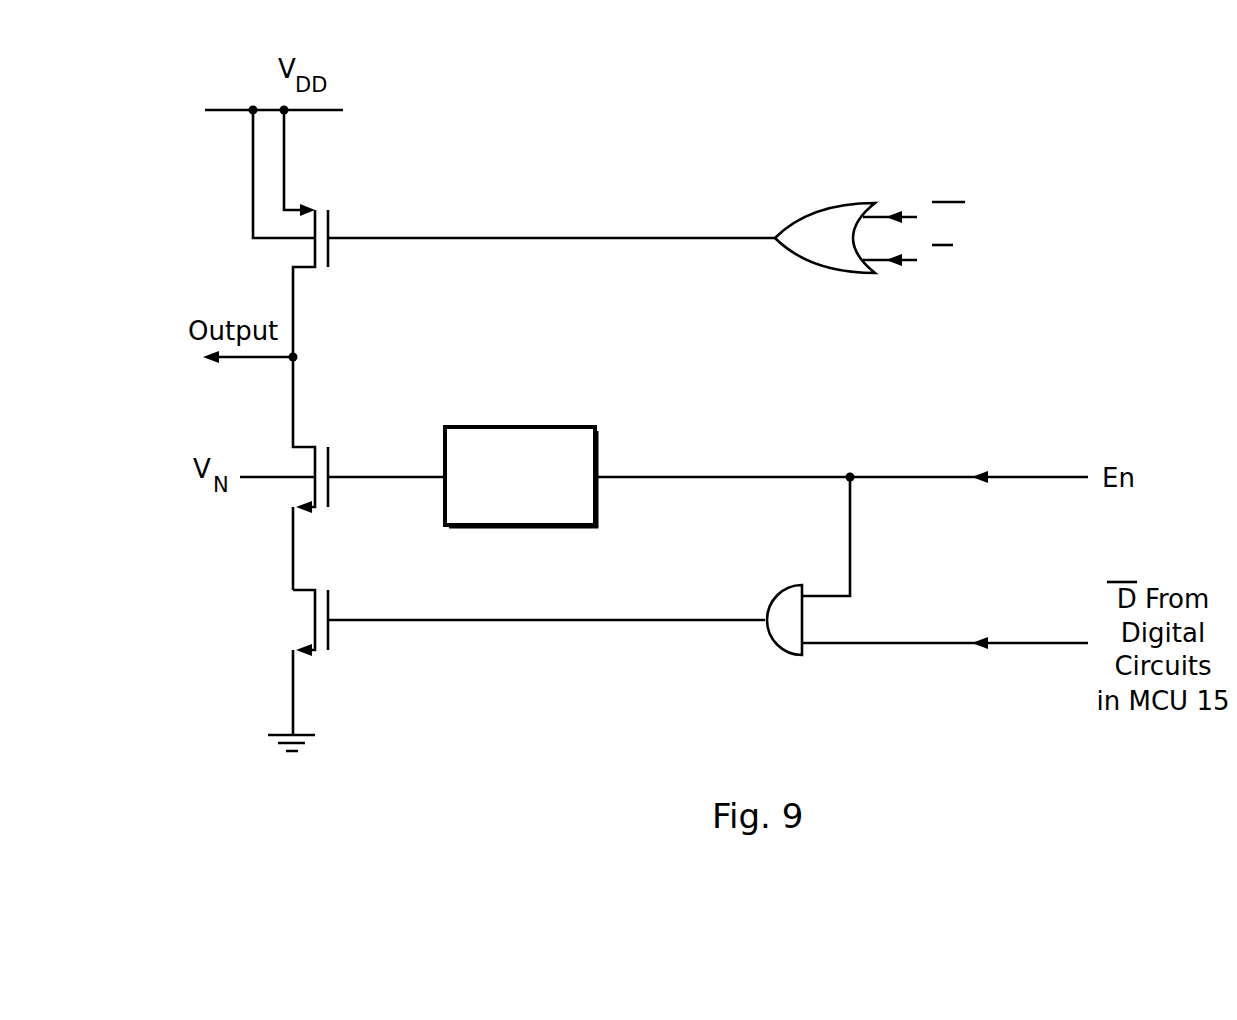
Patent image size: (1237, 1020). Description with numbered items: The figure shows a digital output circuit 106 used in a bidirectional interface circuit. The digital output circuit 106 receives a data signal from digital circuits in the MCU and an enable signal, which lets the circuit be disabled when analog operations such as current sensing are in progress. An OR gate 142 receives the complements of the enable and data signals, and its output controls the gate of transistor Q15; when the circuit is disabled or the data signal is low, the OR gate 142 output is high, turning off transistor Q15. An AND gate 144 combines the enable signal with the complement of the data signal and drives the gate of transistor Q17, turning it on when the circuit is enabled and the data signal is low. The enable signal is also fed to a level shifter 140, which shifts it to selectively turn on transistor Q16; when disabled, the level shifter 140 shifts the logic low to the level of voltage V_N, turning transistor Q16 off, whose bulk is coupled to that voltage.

The digital output circuit 106 is at (1040, 138).
The level shifter 140 is at (518, 427).
The OR gate 142 is at (820, 205).
The AND gate 144 is at (778, 585).
The transistor Q15 is at (514, 233).
The transistor Q16 is at (342, 473).
The transistor Q17 is at (529, 658).